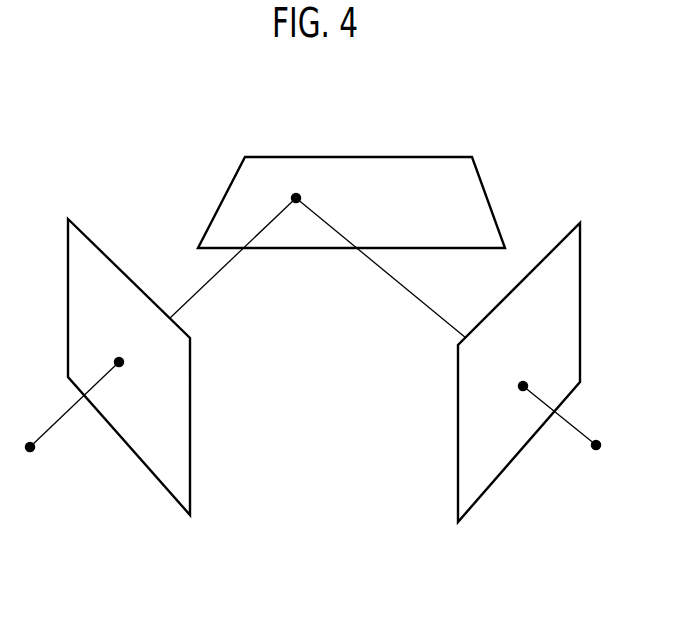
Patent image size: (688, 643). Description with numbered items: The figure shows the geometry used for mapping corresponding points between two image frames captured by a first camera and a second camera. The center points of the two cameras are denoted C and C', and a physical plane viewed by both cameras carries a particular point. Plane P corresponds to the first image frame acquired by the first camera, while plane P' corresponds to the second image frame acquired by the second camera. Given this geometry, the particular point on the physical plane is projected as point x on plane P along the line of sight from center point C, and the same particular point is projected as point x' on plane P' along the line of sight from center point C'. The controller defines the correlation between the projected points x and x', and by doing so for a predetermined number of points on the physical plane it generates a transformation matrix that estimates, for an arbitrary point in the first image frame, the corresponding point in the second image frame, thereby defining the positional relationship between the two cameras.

The plane P is at (129, 367).
The projected point x is at (125, 353).
The center point of the first camera C is at (70, 420).
The plane P' is at (519, 372).
The projected point x' is at (527, 374).
The center point of the second camera C' is at (569, 432).